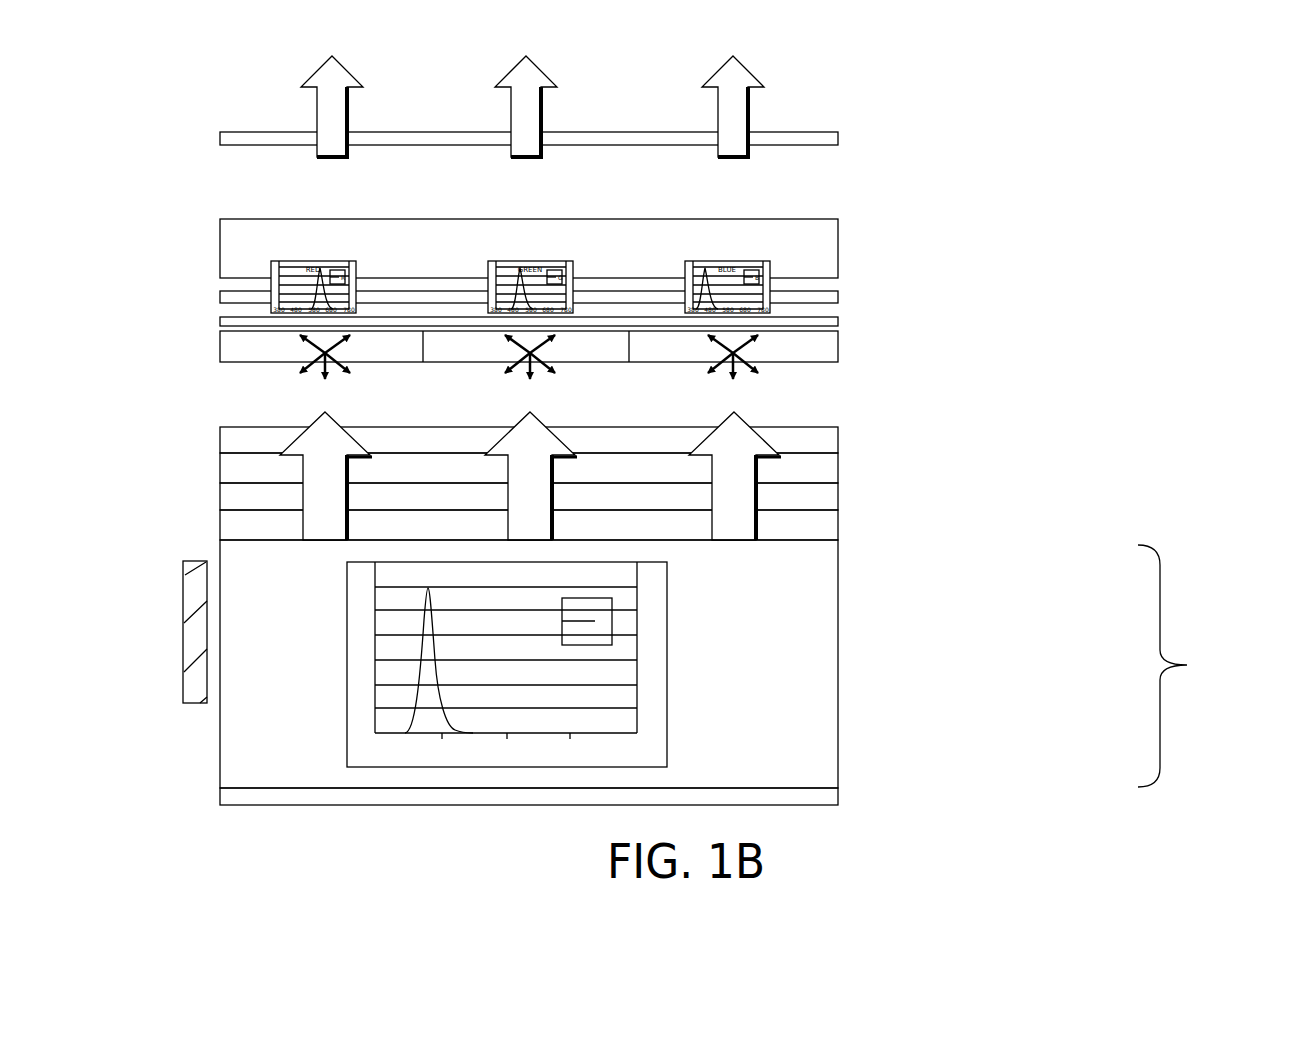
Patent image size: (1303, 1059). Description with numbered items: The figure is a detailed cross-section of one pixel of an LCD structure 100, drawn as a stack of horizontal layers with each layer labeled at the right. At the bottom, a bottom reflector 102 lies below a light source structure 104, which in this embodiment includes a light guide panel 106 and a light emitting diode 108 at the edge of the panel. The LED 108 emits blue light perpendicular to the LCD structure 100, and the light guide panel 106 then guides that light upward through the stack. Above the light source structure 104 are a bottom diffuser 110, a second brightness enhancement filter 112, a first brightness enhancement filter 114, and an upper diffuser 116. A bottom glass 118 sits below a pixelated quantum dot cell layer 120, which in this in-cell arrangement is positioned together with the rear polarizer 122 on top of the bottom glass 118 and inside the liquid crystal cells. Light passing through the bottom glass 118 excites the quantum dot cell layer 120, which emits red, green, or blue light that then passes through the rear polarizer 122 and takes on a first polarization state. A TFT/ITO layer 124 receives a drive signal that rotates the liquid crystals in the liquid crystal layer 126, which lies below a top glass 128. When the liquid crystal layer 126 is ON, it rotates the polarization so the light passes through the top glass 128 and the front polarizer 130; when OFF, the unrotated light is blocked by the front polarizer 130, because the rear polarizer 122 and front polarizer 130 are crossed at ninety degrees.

The LCD structure 100 is at (1185, 105).
The bottom reflector 102 is at (838, 797).
The light source structure 104 is at (1187, 665).
The light guide panel 106 is at (838, 684).
The light emitting diode (LED) 108 is at (183, 627).
The bottom diffuser 110 is at (838, 526).
The second brightness enhancement filter (BEF2) 112 is at (838, 498).
The first brightness enhancement filter (BEF1) 114 is at (838, 471).
The upper diffuser 116 is at (838, 442).
The bottom glass 118 is at (830, 395).
The pixelated quantum dot cell layer 120 is at (838, 346).
The rear polarizer 122 is at (838, 319).
The TFT/ITO layer 124 is at (838, 293).
The liquid crystal layer 126 is at (838, 246).
The top glass 128 is at (830, 189).
The front polarizer 130 is at (838, 137).